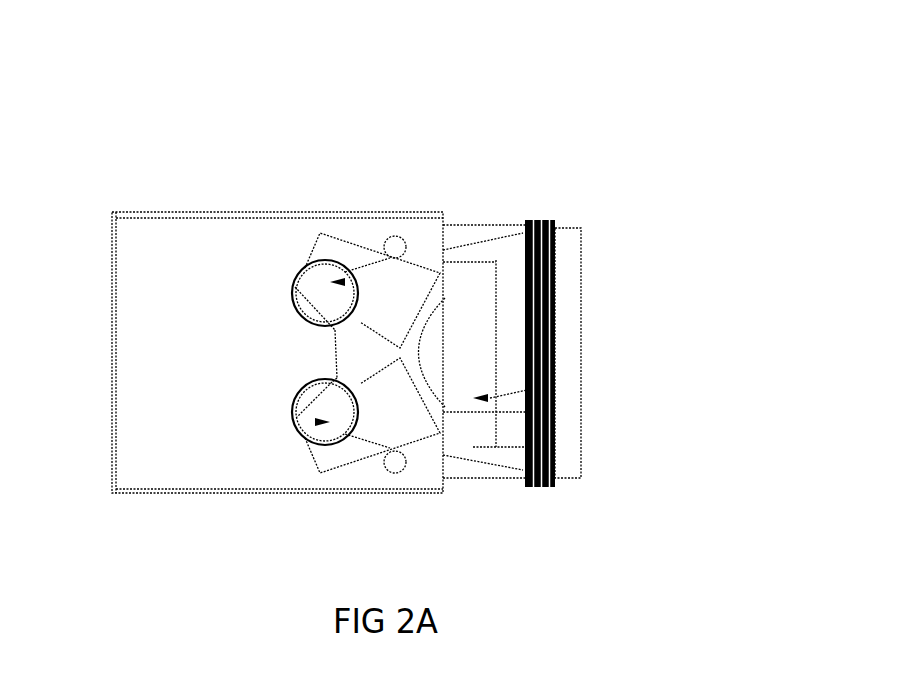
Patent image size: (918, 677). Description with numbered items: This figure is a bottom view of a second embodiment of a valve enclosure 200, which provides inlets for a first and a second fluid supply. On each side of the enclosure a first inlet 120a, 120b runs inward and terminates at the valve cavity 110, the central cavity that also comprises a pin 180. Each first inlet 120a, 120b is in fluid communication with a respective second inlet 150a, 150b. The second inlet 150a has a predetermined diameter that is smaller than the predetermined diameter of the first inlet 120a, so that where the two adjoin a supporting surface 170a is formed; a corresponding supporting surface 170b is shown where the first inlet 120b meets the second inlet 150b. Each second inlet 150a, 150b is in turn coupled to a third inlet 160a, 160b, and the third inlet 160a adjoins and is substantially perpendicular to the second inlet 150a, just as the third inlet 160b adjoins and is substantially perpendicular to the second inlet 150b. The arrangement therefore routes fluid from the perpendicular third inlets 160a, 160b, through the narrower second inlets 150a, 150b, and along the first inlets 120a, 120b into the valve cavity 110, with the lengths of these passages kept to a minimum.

The valve enclosure 200 is at (157, 58).
The valve cavity 110 is at (443, 384).
The first inlet 120a is at (418, 300).
The first inlet 120b is at (428, 411).
The second inlet 150a is at (390, 285).
The second inlet 150b is at (370, 452).
The third inlet 160a is at (550, 220).
The third inlet 160b is at (443, 447).
The supporting surface 170a is at (383, 259).
The supporting surface 170b is at (368, 488).
The pin 180 is at (515, 440).